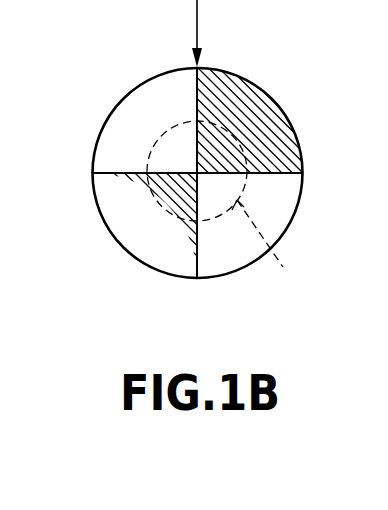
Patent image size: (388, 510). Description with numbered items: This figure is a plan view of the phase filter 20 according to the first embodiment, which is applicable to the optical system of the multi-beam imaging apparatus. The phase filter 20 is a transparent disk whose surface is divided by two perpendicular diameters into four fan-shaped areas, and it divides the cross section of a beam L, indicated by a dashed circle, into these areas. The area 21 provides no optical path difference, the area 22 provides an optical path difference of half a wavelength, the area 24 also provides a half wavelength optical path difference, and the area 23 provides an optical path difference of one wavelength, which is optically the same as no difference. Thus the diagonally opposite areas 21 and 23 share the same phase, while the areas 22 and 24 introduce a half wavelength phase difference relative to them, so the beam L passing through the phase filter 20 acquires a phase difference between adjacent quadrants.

The phase filter 20 is at (260, 72).
The area 21 is at (278, 133).
The area 22 is at (283, 205).
The area 23 is at (130, 235).
The area 24 is at (135, 110).
The beam L is at (269, 242).